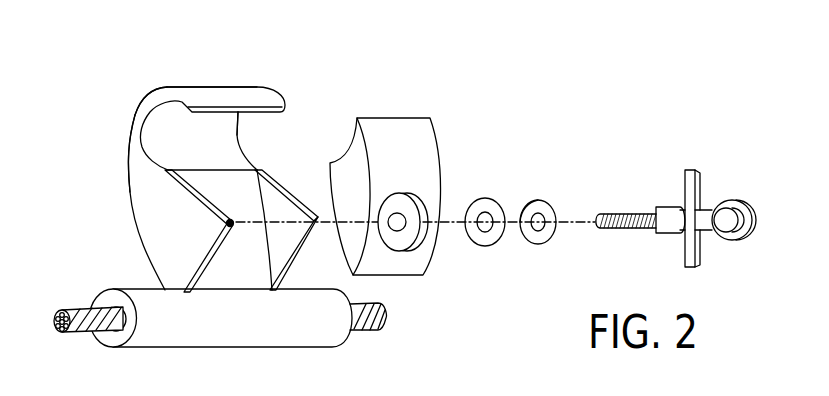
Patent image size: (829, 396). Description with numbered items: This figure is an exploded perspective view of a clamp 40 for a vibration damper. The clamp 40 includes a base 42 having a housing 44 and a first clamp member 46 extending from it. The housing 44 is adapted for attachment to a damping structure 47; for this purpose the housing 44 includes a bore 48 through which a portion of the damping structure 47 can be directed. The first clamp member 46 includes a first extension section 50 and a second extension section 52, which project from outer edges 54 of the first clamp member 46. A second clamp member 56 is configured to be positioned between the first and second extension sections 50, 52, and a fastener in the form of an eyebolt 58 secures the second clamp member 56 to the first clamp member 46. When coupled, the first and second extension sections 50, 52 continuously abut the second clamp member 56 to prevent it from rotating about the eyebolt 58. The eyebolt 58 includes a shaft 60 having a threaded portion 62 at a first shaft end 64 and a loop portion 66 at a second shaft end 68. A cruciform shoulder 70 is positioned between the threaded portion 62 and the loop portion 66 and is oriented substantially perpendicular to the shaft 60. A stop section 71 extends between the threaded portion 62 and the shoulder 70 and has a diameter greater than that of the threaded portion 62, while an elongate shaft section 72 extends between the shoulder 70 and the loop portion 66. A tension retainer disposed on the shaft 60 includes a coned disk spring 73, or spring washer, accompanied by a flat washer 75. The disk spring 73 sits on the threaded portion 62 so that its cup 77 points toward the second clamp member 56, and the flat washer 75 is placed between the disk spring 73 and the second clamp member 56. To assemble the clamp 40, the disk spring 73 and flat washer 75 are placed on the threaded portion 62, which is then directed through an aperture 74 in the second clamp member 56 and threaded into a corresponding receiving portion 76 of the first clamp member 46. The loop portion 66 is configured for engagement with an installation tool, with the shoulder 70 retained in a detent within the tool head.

The clamp 40 is at (557, 374).
The base 42 is at (72, 228).
The housing 44 is at (172, 350).
The first clamp member 46 is at (213, 86).
The damping structure 47 is at (78, 307).
The bore 48 is at (115, 331).
The first extension section 50 is at (197, 193).
The second extension section 52 is at (277, 177).
The outer edges 54 is at (132, 128).
The second clamp member 56 is at (425, 103).
The eyebolt 58 is at (687, 130).
The shaft 60 is at (668, 234).
The threaded portion 62 is at (637, 228).
The first shaft end 64 is at (597, 212).
The loop portion 66 is at (733, 240).
The second shaft end 68 is at (751, 218).
The cruciform shoulder 70 is at (693, 170).
The stop section 71 is at (655, 206).
The elongate shaft section 72 is at (705, 229).
The coned disk spring 73 is at (538, 200).
The aperture 74 is at (403, 231).
The flat washer 75 is at (485, 198).
The receiving portion 76 is at (245, 226).
The cup 77 is at (522, 233).